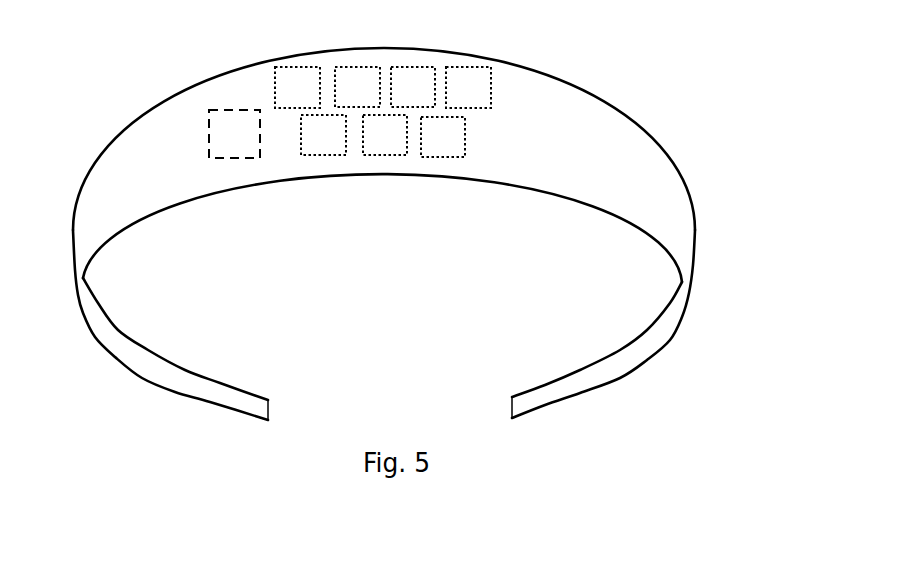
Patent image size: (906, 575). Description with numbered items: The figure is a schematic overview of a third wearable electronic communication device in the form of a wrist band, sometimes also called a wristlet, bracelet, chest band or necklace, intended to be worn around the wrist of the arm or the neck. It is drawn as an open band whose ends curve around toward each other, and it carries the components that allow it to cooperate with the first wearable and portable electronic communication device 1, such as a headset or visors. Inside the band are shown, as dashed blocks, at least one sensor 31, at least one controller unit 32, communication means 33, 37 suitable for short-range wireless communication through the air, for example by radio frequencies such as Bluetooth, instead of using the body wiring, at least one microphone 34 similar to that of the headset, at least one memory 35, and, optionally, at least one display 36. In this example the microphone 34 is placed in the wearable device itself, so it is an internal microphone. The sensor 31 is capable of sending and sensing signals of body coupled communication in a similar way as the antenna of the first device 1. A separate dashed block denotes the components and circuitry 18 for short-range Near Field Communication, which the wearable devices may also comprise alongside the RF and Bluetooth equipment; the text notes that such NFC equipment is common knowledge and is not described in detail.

The first wearable and portable electronic communication device 1 is at (580, 60).
The components and circuitry for Near Field Communication 18 is at (225, 137).
The sensor 31 is at (297, 87).
The controller unit 32 is at (357, 87).
The communication means 33 is at (413, 87).
The microphone 34 is at (468, 87).
The memory 35 is at (323, 135).
The display 36 is at (385, 135).
The communication means 37 is at (443, 137).